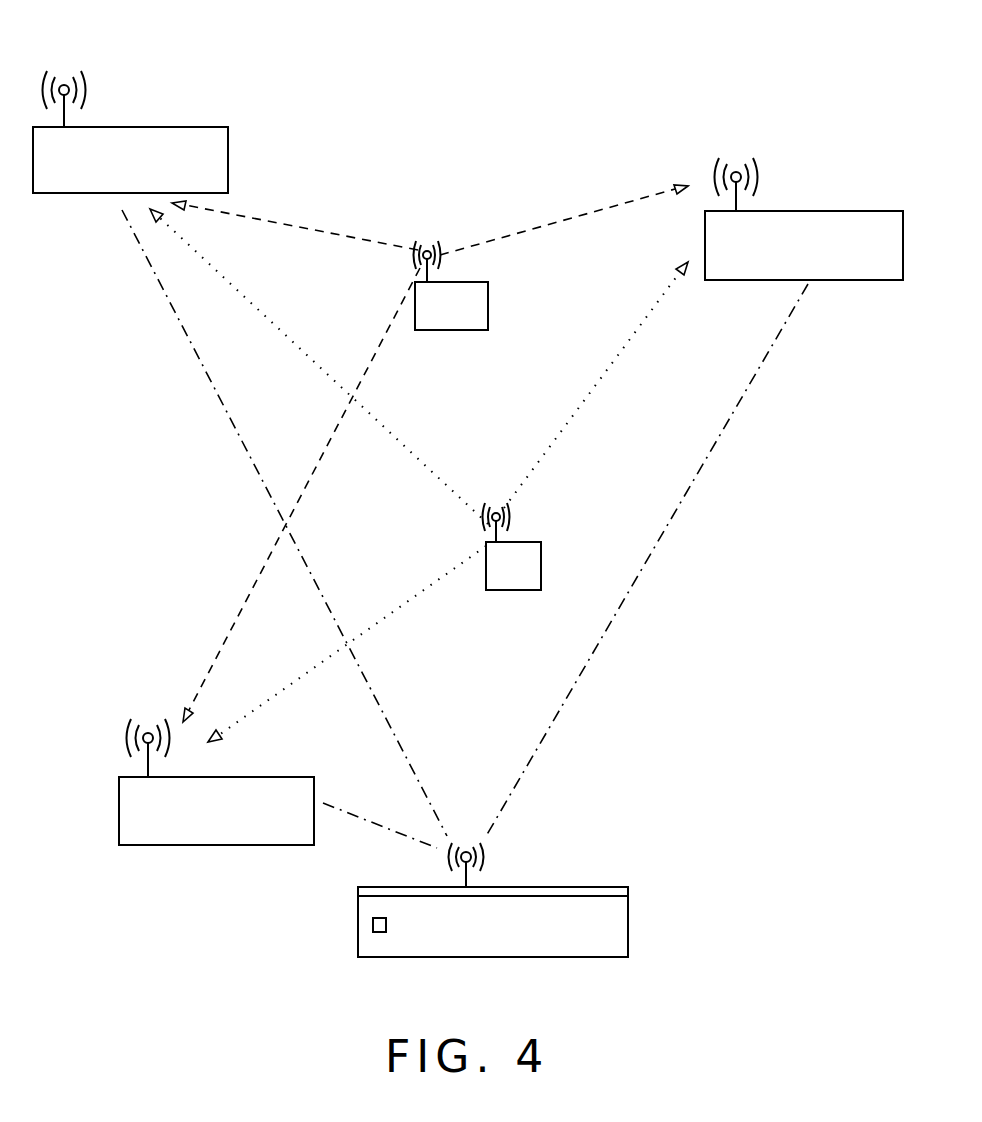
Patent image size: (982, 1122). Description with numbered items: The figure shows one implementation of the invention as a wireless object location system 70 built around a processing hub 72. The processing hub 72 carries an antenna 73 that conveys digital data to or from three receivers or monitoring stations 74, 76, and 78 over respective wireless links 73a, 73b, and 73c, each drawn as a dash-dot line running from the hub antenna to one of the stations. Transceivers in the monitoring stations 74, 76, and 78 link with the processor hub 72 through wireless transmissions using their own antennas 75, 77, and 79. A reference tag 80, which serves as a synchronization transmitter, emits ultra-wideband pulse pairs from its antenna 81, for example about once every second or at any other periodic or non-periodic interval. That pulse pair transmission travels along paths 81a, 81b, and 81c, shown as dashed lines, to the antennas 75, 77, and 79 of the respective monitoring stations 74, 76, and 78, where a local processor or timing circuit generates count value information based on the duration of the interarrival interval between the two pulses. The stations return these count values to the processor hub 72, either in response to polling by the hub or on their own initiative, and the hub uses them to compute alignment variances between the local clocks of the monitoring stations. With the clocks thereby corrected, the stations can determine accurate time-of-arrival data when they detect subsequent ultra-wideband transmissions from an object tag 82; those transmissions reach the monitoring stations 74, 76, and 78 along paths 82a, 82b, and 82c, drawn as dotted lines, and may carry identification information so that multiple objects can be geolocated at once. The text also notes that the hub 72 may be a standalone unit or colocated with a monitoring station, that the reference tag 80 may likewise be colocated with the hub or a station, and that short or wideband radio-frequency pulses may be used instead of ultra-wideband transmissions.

The wireless object location system 70 is at (582, 112).
The processing hub 72 is at (570, 887).
The antenna 73 is at (505, 849).
The wireless link 73a is at (360, 818).
The wireless link 73b is at (220, 403).
The wireless link 73c is at (650, 548).
The monitoring station 74 is at (119, 812).
The antenna 75 is at (98, 728).
The monitoring station 76 is at (228, 157).
The antenna 77 is at (104, 76).
The monitoring station 78 is at (840, 280).
The antenna 79 is at (790, 170).
The reference tag 80 is at (488, 312).
The antenna 81 is at (450, 241).
The path 81a is at (372, 352).
The path 81b is at (316, 230).
The path 81c is at (622, 205).
The object tag 82 is at (541, 567).
The path 82a is at (428, 568).
The path 82b is at (440, 482).
The path 82c is at (548, 447).